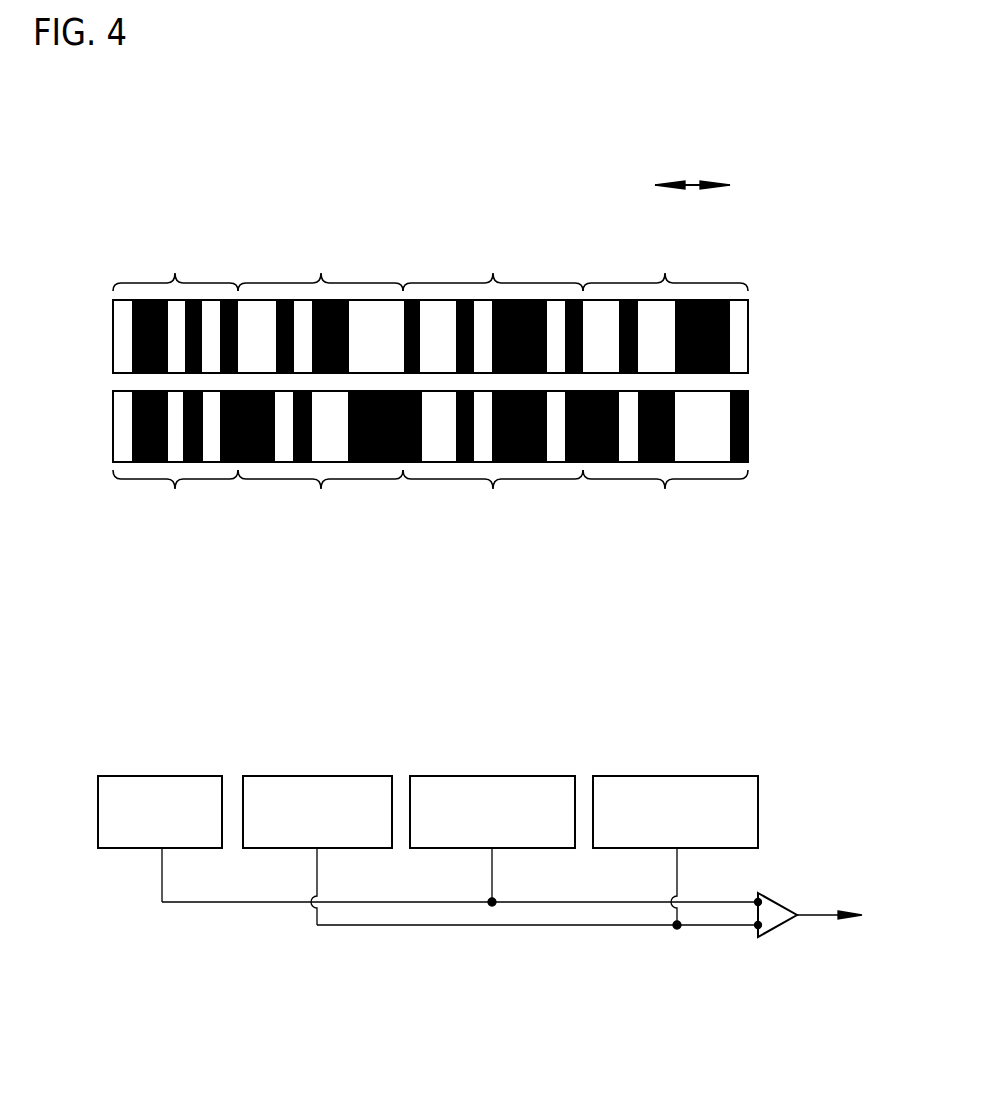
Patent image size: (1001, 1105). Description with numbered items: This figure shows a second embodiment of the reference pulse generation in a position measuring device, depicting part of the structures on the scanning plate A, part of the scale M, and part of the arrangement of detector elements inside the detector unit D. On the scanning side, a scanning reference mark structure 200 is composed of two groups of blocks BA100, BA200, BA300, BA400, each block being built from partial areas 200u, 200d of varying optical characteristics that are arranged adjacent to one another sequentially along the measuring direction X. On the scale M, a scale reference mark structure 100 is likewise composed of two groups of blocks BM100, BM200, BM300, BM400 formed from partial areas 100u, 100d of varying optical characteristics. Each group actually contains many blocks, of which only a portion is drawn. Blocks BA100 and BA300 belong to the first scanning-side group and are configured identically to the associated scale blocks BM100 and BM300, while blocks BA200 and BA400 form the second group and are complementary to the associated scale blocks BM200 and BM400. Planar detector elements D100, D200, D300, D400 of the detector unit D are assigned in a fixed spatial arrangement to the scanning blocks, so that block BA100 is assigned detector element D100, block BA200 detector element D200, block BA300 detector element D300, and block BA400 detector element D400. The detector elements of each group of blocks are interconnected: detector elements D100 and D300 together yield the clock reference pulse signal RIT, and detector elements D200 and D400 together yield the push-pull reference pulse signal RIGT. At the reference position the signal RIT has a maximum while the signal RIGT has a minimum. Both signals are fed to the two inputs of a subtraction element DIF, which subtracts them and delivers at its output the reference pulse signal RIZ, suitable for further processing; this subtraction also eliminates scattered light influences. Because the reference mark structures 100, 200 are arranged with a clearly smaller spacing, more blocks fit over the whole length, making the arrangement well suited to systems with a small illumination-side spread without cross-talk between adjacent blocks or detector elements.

The scale reference mark structure 100 is at (97, 421).
The partial area 100d is at (122, 433).
The partial area 100u is at (127, 462).
The scanning reference mark structure 200 is at (98, 333).
The partial area 200u is at (140, 300).
The partial area 200d is at (121, 317).
The block BA100 is at (175, 259).
The block BA200 is at (320, 259).
The block BA300 is at (493, 259).
The block BA400 is at (665, 259).
The block BM100 is at (175, 505).
The block BM200 is at (320, 505).
The block BM300 is at (493, 505).
The block BM400 is at (665, 505).
The detector element D100 is at (157, 790).
The detector element D200 is at (318, 790).
The detector element D300 is at (483, 790).
The detector element D400 is at (673, 790).
The scanning plate A is at (776, 336).
The scale M is at (776, 426).
The detector unit D is at (786, 812).
The measuring direction X is at (692, 159).
The clock reference pulse signal RIT is at (462, 885).
The push-pull reference pulse signal RIGT is at (539, 945).
The reference pulse signal RIZ is at (829, 893).
The subtraction element DIF is at (775, 917).